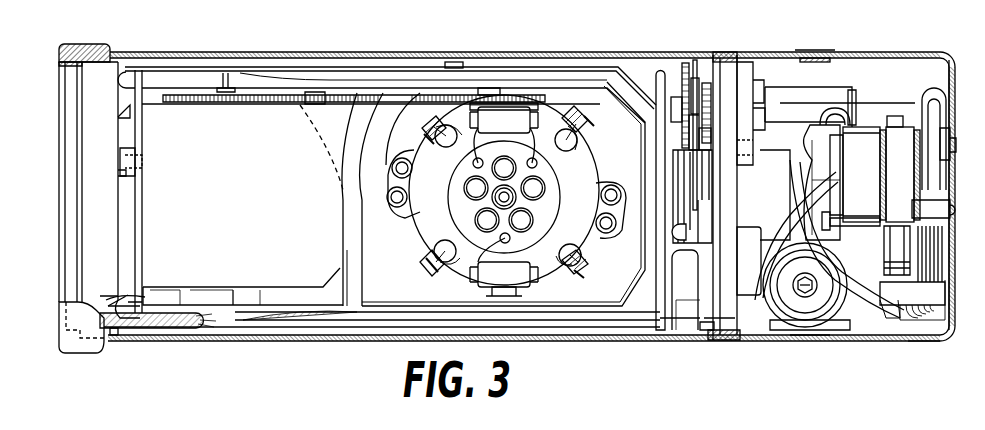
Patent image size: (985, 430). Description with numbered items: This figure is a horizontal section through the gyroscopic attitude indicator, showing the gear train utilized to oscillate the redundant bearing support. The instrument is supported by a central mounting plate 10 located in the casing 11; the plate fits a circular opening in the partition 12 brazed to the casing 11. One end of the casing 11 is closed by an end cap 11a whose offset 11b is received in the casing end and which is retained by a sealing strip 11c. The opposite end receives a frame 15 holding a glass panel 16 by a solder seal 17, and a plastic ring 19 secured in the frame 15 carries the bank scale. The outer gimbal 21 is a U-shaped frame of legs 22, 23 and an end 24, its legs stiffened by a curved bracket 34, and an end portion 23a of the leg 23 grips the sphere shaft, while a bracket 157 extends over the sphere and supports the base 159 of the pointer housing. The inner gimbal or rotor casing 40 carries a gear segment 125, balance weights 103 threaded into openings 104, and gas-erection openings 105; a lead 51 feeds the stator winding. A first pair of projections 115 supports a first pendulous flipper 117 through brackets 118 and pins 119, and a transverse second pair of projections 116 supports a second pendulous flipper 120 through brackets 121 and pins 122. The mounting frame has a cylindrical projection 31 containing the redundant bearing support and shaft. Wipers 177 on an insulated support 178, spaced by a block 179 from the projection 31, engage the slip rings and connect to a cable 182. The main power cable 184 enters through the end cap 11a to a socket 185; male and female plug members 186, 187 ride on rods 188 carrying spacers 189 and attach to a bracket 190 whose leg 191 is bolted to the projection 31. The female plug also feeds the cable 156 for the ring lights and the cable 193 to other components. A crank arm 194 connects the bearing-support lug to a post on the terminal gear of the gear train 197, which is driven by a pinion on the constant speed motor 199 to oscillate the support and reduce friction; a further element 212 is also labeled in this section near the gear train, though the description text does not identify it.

The central mounting plate 10 is at (722, 60).
The casing 11 is at (531, 52).
The end cap 11a is at (952, 52).
The offset 11b is at (812, 50).
The sealing strip 11c is at (808, 48).
The partition 12 is at (732, 58).
The frame 15 is at (58, 56).
The glass panel 16 is at (70, 160).
The solder seal 17 is at (80, 44).
The plastic ring 19 is at (112, 66).
The outer gimbal 21 is at (372, 320).
The leg 22 is at (326, 318).
The leg 23 is at (388, 70).
The end portion 23a is at (182, 70).
The end 24 is at (642, 190).
The cylindrical projection 31 is at (773, 195).
The top curved bracket 34 is at (372, 138).
The rotor casing 40 is at (420, 246).
The lead 51 is at (552, 128).
The balance weights 103 is at (480, 102).
The openings 104 is at (530, 292).
The openings 105 is at (540, 188).
The first pair of projections 115 is at (572, 150).
The second pair of projections 116 is at (440, 146).
The first pendulous flipper 117 is at (584, 138).
The brackets 118 is at (590, 126).
The pins 119 is at (576, 114).
The second pendulous flipper 120 is at (588, 258).
The brackets 121 is at (444, 118).
The pins 122 is at (436, 130).
The gear segment 125 is at (488, 92).
The cable 156 is at (138, 330).
The bracket 157 is at (140, 212).
The base 159 is at (130, 152).
The wipers 177 is at (950, 338).
The insulated support 178 is at (912, 273).
The block 179 is at (878, 262).
The cable 182 is at (880, 316).
The main power cable 184 is at (940, 80).
The socket 185 is at (902, 120).
The male plug member 186 is at (898, 168).
The female plug member 187 is at (860, 220).
The rods 188 is at (940, 160).
The spacers 189 is at (935, 210).
The bracket 190 is at (842, 150).
The leg 191 is at (810, 158).
The cable 193 is at (838, 96).
The crank arm 194 is at (688, 206).
The gear train 197 is at (694, 60).
The constant speed motor 199 is at (788, 96).
The bracket 212 is at (686, 258).